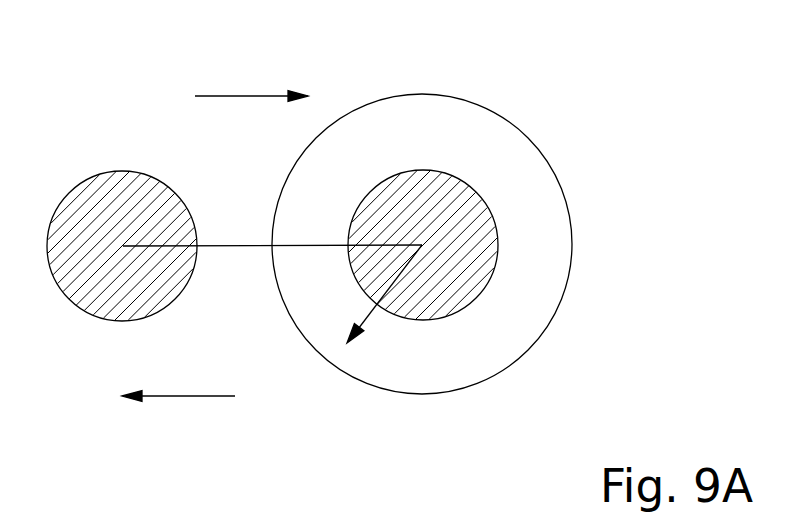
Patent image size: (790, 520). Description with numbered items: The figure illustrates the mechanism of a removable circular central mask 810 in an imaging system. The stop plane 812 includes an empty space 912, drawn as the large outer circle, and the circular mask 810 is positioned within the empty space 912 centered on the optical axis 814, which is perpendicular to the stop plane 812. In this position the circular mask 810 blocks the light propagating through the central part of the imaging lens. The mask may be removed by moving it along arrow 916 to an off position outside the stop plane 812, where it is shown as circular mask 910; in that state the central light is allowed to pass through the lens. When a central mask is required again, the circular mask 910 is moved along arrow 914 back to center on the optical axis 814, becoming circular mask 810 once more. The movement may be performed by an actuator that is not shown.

The circular central mask 810 is at (427, 170).
The stop plane 812 is at (478, 105).
The optical axis 814 is at (372, 315).
The circular mask (off position) 910 is at (128, 172).
The empty space 912 is at (515, 155).
The arrow 914 is at (235, 96).
The arrow 916 is at (168, 396).